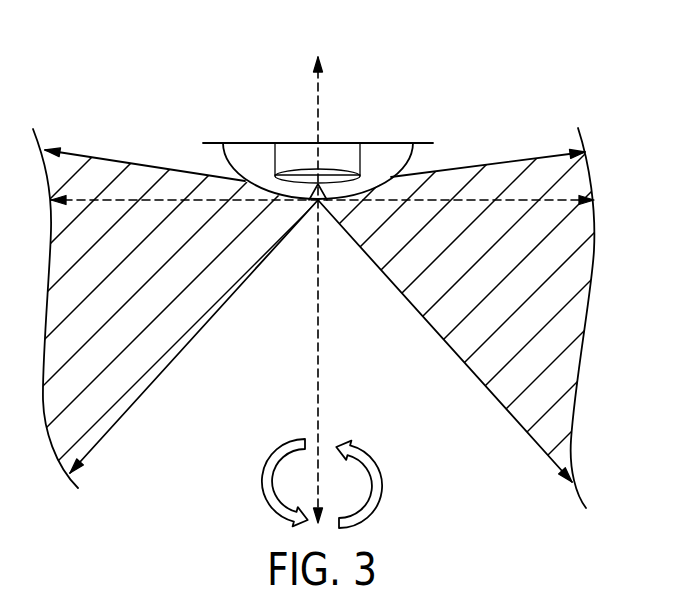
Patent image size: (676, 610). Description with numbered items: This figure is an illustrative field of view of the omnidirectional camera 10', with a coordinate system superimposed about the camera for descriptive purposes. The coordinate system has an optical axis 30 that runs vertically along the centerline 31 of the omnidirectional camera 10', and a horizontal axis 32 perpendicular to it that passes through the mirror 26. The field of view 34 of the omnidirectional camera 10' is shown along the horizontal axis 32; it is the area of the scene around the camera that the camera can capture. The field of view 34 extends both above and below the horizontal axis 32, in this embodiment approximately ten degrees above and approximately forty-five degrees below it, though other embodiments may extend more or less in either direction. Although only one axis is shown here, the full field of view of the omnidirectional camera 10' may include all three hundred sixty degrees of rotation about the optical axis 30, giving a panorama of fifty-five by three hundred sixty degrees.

The omnidirectional camera 10' is at (318, 108).
The mirror 26 is at (330, 186).
The optical axis 30 is at (320, 395).
The centerline 31 is at (317, 160).
The horizontal axis 32 is at (436, 200).
The field of view 34 is at (68, 299).